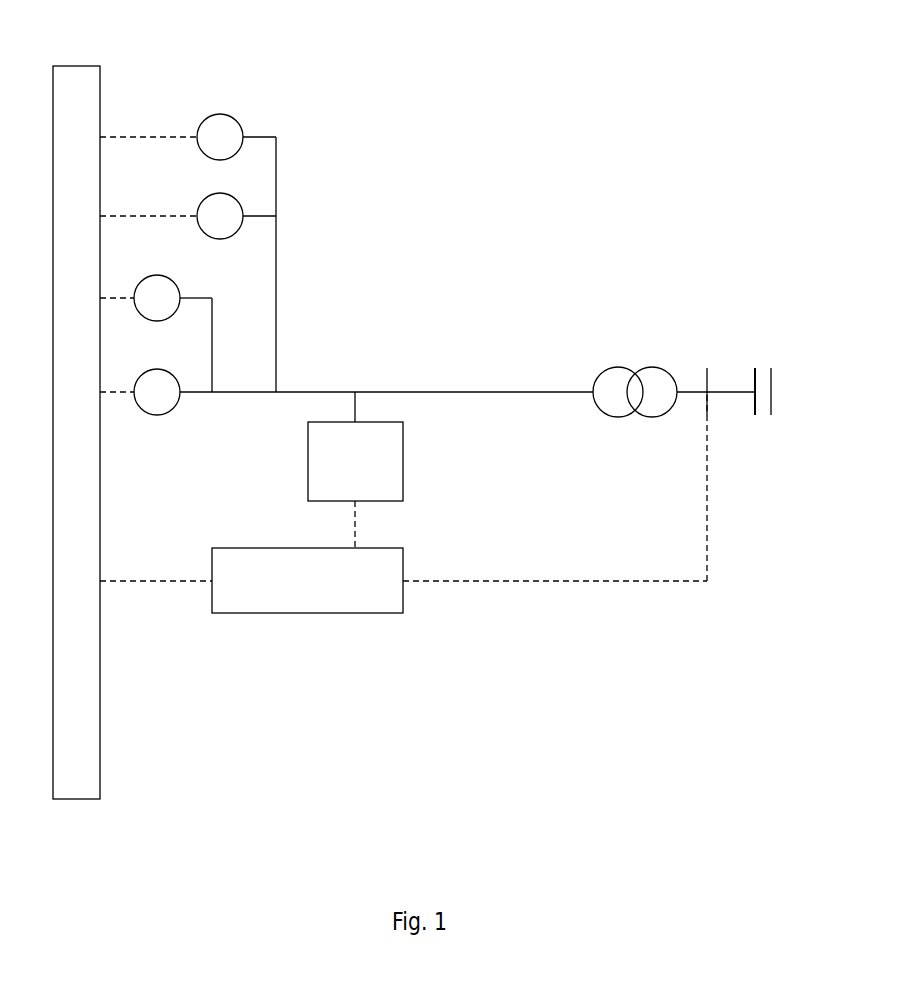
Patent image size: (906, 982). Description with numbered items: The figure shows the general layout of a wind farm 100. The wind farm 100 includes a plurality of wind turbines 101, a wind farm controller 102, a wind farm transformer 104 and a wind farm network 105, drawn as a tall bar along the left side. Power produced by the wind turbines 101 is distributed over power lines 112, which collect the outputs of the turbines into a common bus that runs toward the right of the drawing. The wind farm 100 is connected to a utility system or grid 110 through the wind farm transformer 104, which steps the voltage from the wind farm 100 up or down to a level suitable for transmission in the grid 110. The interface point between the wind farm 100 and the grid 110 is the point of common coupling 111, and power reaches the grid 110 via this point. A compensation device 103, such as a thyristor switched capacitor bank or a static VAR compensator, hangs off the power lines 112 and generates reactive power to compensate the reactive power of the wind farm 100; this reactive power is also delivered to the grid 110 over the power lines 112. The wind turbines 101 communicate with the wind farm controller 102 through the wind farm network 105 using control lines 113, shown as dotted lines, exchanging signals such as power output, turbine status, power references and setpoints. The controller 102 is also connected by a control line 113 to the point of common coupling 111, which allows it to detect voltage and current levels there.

The wind farm 100 is at (565, 124).
The wind turbines 101 is at (227, 192).
The wind farm controller 102 is at (307, 580).
The compensation device 103 is at (355, 446).
The wind farm transformer 104 is at (617, 367).
The wind farm network 105 is at (68, 66).
The grid 110 is at (758, 363).
The point of common coupling 111 is at (707, 385).
The power lines 112 is at (412, 391).
The control lines 113 is at (133, 137).